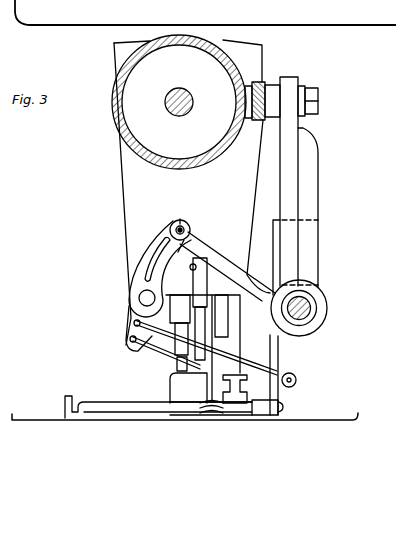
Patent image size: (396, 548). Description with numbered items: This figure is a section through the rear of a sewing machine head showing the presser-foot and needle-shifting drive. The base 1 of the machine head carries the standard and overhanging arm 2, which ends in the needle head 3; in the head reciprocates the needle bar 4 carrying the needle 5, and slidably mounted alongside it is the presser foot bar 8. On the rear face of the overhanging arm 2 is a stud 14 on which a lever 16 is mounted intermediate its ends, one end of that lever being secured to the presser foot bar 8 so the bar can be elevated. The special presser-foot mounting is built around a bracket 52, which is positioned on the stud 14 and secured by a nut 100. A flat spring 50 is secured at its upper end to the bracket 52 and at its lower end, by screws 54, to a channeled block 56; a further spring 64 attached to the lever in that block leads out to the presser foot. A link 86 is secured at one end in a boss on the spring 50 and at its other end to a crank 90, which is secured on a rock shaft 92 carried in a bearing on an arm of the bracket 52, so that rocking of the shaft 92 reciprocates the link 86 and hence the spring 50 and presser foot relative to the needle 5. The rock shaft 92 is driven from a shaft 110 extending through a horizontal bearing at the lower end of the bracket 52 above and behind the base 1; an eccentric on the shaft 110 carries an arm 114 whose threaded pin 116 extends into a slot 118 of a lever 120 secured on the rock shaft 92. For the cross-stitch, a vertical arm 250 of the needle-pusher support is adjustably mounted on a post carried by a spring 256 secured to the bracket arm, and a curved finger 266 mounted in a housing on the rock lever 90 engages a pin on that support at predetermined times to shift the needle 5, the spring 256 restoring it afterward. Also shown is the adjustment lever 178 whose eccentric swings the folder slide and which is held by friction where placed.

The base 1 is at (25, 420).
The overhanging arm 2 is at (112, 112).
The needle head 3 is at (117, 152).
The needle bar 4 is at (173, 348).
The needle 5 is at (177, 371).
The presser foot bar 8 is at (218, 318).
The stud 14 is at (250, 122).
The lever 16 is at (266, 84).
The flat spring 50 is at (278, 356).
The bracket 52 is at (312, 193).
The screws 54 is at (283, 407).
The channeled block 56 is at (265, 408).
The spring 64 is at (297, 380).
The link 86 is at (258, 350).
The crank 90 is at (133, 315).
The rock shaft 92 is at (144, 296).
The nut 100 is at (315, 99).
The shaft 110 is at (313, 308).
The arm 114 is at (217, 264).
The threaded pin 116 is at (171, 228).
The slot 118 is at (168, 244).
The lever 120 is at (150, 260).
The lever 178 is at (102, 407).
The vertical arm 250 is at (201, 336).
The spring 256 is at (206, 247).
The finger 266 is at (148, 350).